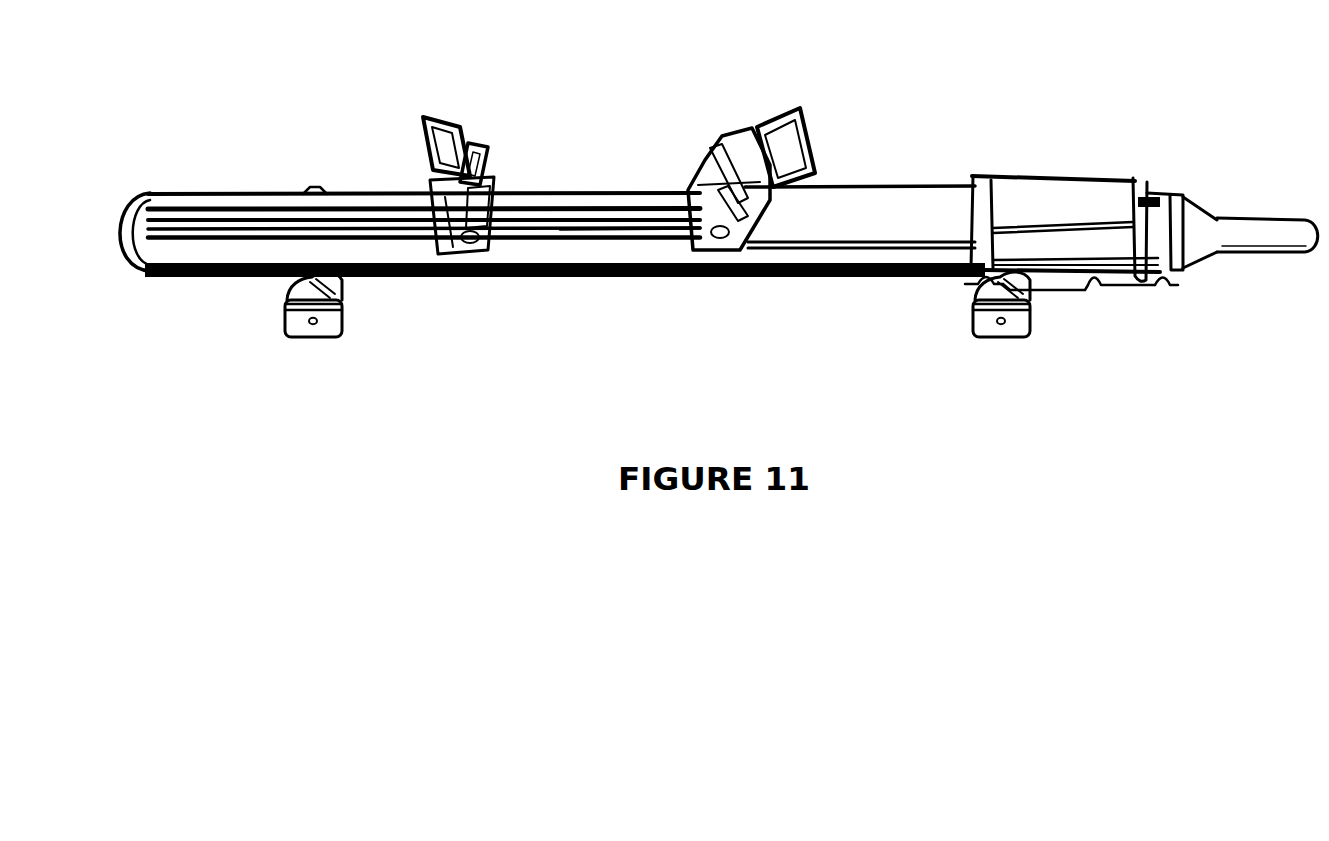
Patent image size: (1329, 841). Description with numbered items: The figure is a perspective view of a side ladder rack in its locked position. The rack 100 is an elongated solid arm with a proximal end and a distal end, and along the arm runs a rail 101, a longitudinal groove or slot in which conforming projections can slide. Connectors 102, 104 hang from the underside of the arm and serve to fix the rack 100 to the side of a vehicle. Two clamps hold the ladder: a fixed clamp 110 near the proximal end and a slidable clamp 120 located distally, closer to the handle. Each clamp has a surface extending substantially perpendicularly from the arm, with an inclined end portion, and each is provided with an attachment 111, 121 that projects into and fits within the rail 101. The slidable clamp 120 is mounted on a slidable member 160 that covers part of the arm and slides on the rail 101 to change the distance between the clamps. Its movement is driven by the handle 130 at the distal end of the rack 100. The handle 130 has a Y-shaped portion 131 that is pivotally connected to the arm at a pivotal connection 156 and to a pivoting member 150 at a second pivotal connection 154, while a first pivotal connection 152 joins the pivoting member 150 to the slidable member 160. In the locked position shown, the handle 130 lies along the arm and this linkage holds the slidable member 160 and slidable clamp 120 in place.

The rack 100 is at (180, 248).
The rail 101 is at (541, 235).
The connector 102 is at (299, 324).
The connector 104 is at (990, 320).
The fixed clamp 110 is at (418, 158).
The attachment 111 is at (497, 167).
The slidable clamp 120 is at (815, 152).
The attachment 121 is at (685, 197).
The handle 130 is at (1290, 238).
The Y-shaped portion 131 is at (1203, 275).
The pivoting member 150 is at (1030, 213).
The first pivotal connection 152 is at (975, 283).
The second pivotal connection 154 is at (1160, 287).
The pivotal connection 156 is at (1093, 290).
The slidable member 160 is at (923, 225).